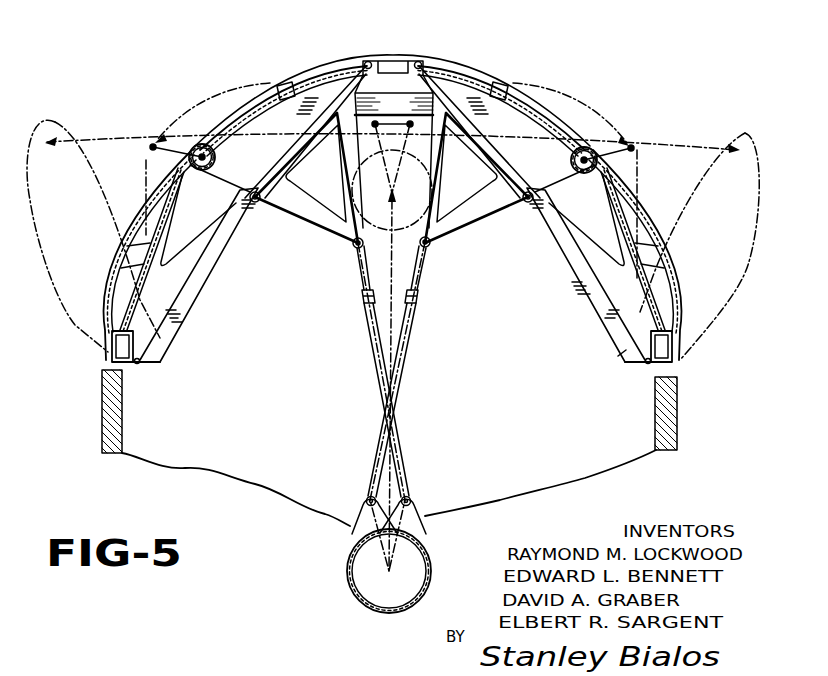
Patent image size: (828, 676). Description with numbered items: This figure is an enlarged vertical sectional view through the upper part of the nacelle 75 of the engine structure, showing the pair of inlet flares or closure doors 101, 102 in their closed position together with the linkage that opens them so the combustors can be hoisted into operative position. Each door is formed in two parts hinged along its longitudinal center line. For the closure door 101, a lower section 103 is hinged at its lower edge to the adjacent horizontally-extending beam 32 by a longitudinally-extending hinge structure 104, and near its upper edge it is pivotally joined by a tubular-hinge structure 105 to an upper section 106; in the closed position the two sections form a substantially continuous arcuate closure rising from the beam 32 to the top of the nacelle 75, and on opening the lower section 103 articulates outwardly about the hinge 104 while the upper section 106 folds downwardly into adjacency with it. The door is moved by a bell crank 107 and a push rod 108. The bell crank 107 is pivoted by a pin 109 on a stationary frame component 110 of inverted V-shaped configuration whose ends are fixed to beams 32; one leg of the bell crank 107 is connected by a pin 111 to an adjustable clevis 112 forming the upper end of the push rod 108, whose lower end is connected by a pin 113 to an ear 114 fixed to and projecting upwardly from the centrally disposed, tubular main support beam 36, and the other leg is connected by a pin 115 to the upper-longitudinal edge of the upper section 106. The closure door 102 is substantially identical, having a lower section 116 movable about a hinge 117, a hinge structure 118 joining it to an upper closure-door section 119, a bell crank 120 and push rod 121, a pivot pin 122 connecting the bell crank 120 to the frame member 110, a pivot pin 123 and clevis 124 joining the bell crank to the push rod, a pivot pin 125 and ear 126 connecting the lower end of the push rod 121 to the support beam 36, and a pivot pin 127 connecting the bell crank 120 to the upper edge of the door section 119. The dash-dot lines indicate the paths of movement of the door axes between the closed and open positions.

The horizontally-extending beam 32 is at (136, 365).
The main support beam 36 is at (352, 580).
The nacelle 75 is at (685, 428).
The closure door 101 is at (480, 62).
The closure door 102 is at (322, 64).
The lower section 103 is at (667, 287).
The hinge structure 104 is at (673, 365).
The tubular-hinge structure 105 is at (592, 145).
The upper section 106 is at (537, 97).
The bell crank 107 is at (470, 225).
The push rod 108 is at (412, 340).
The pin 109 is at (524, 206).
The stationary frame component 110 is at (595, 324).
The pin 111 is at (633, 147).
The clevis 112 is at (418, 282).
The pin 113 is at (366, 497).
The ear 114 is at (358, 528).
The pin 115 is at (421, 62).
The lower section 116 is at (120, 268).
The hinge 117 is at (100, 362).
The hinge structure 118 is at (212, 134).
The upper closure-door section 119 is at (250, 93).
The bell crank 120 is at (312, 217).
The push rod 121 is at (377, 338).
The pivot pin 122 is at (257, 203).
The pivot pin 123 is at (354, 247).
The clevis 124 is at (364, 281).
The pivot pin 125 is at (412, 496).
The ear 126 is at (411, 514).
The pivot pin 127 is at (369, 63).